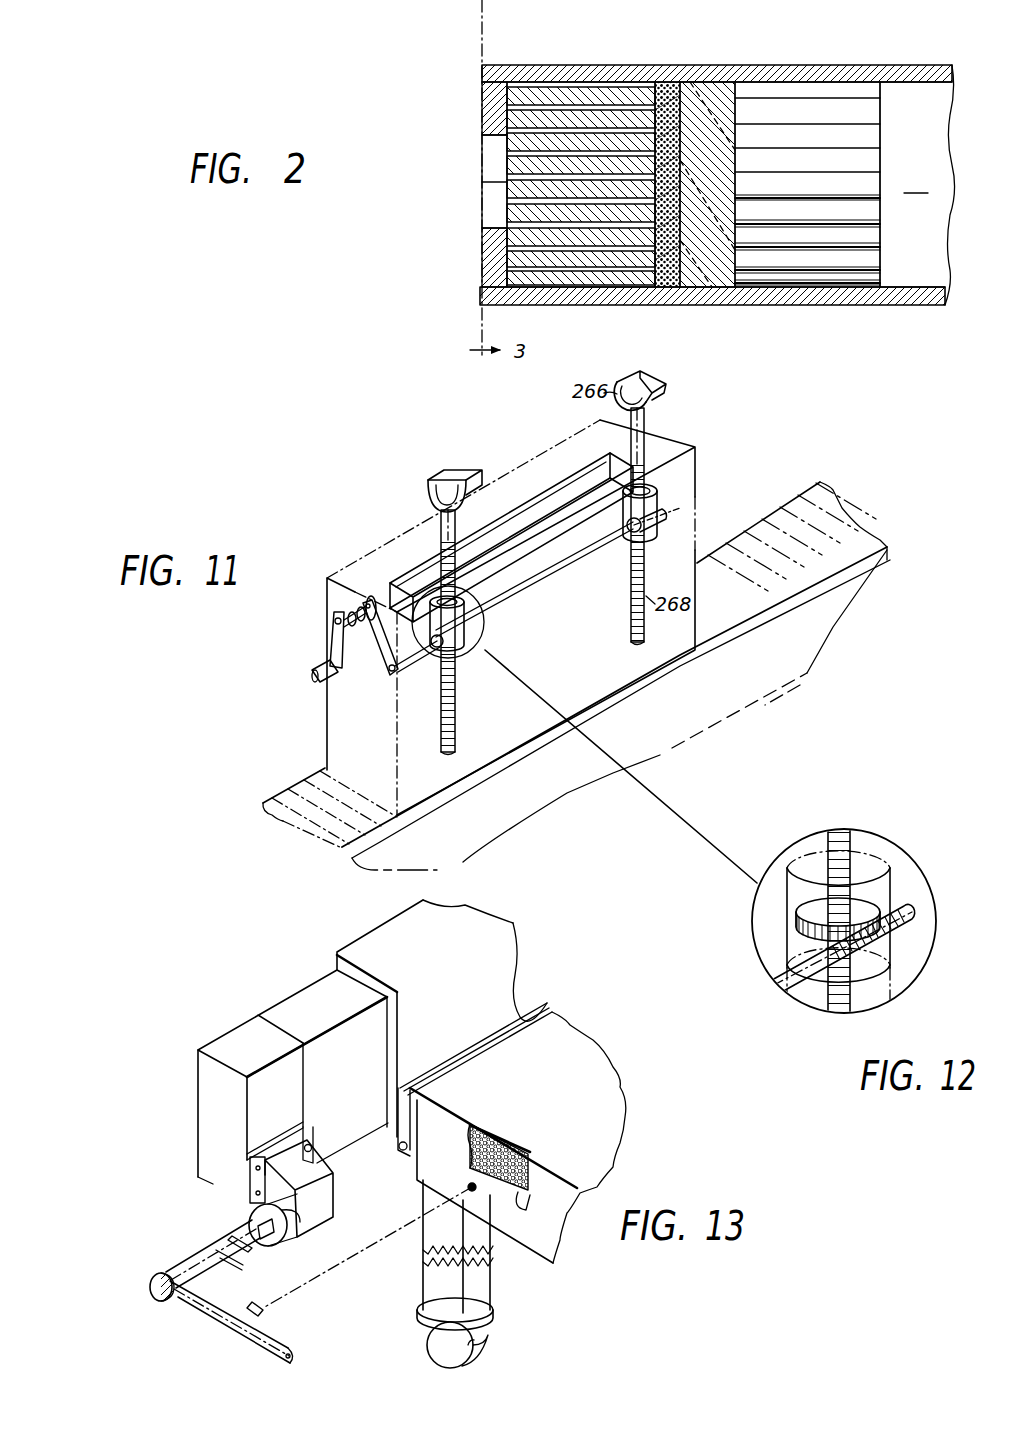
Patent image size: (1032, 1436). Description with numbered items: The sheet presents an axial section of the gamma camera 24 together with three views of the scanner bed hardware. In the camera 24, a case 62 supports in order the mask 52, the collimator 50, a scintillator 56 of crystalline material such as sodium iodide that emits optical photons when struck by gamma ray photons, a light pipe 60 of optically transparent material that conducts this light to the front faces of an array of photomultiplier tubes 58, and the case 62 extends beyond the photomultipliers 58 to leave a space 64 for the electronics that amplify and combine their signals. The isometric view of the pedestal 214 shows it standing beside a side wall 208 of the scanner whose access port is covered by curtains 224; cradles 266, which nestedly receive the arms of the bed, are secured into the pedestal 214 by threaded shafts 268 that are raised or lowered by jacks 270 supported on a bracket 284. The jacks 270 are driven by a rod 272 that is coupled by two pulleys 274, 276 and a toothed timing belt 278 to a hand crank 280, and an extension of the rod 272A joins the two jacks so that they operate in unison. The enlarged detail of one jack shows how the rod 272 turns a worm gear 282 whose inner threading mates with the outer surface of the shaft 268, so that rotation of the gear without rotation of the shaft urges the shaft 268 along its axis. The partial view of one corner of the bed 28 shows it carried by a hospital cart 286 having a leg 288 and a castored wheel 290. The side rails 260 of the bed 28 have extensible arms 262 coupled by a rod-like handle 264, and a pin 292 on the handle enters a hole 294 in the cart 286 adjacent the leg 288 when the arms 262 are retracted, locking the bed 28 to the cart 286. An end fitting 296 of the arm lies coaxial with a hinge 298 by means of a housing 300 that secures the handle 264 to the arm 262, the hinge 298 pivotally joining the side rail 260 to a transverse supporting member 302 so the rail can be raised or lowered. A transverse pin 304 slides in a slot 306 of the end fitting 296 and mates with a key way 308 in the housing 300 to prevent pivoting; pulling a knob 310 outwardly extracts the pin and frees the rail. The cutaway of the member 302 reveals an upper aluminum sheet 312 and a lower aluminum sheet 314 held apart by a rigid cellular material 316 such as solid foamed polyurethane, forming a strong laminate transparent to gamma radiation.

In FIG. 2, the camera 24 is at (836, 72).
In FIG. 2, the collimator 50 is at (500, 206).
In FIG. 2, the mask 52 is at (482, 255).
In FIG. 2, the scintillator 56 is at (668, 84).
In FIG. 2, the photomultiplier tubes 58 is at (773, 115).
In FIG. 2, the light pipe 60 is at (718, 84).
In FIG. 2, the case 62 is at (918, 70).
In FIG. 2, the space 64 is at (916, 183).
In FIG. 11, the side wall 208 is at (860, 610).
In FIG. 11, the pedestal 214 is at (352, 568).
In FIG. 11, the curtains 224 is at (835, 525).
In FIG. 11, the cradles 266 is at (446, 487).
In FIG. 11, the threaded shafts 268 is at (462, 712).
In FIG. 12, the threaded shafts 268 is at (852, 1003).
In FIG. 11, the jacks 270 is at (470, 622).
In FIG. 12, the jacks 270 is at (877, 842).
In FIG. 11, the rod 272 is at (428, 660).
In FIG. 11, the extension of the rod 272A is at (557, 570).
In FIG. 12, the extension of the rod 272A is at (843, 948).
In FIG. 11, the pulley 274 is at (368, 597).
In FIG. 11, the pulley 276 is at (392, 680).
In FIG. 11, the belt 278 is at (352, 653).
In FIG. 11, the hand crank 280 is at (315, 668).
In FIG. 12, the worm gear 282 is at (798, 916).
In FIG. 11, the bracket 284 is at (514, 511).
In FIG. 13, the bed 28 is at (601, 954).
In FIG. 13, the side rails 260 is at (362, 940).
In FIG. 13, the extensible arms 262 is at (300, 1004).
In FIG. 13, the handle 264 is at (205, 1328).
In FIG. 13, the cart 286 is at (488, 1285).
In FIG. 13, the leg 288 is at (423, 1274).
In FIG. 13, the castored wheel 290 is at (488, 1340).
In FIG. 13, the pin 292 is at (265, 1314).
In FIG. 13, the hole 294 is at (474, 1192).
In FIG. 13, the end fitting 296 is at (208, 1247).
In FIG. 13, the hinge 298 is at (397, 1148).
In FIG. 13, the housing 300 is at (325, 1197).
In FIG. 13, the transverse supporting member 302 is at (616, 1098).
In FIG. 13, the transverse pin 304 is at (252, 1250).
In FIG. 13, the slot 306 is at (232, 1260).
In FIG. 13, the key way 308 is at (250, 1222).
In FIG. 13, the knob 310 is at (152, 1297).
In FIG. 13, the upper aluminum sheet 312 is at (500, 1130).
In FIG. 13, the lower aluminum sheet 314 is at (540, 1196).
In FIG. 13, the rigid cellular material 316 is at (538, 1160).